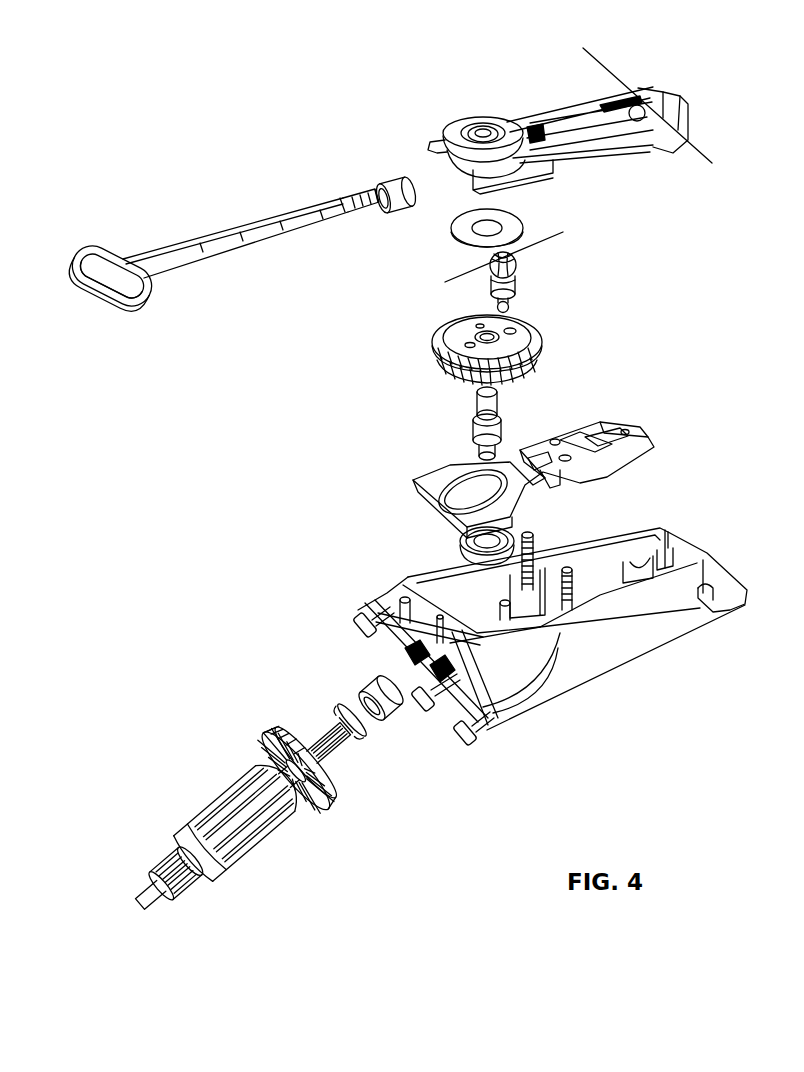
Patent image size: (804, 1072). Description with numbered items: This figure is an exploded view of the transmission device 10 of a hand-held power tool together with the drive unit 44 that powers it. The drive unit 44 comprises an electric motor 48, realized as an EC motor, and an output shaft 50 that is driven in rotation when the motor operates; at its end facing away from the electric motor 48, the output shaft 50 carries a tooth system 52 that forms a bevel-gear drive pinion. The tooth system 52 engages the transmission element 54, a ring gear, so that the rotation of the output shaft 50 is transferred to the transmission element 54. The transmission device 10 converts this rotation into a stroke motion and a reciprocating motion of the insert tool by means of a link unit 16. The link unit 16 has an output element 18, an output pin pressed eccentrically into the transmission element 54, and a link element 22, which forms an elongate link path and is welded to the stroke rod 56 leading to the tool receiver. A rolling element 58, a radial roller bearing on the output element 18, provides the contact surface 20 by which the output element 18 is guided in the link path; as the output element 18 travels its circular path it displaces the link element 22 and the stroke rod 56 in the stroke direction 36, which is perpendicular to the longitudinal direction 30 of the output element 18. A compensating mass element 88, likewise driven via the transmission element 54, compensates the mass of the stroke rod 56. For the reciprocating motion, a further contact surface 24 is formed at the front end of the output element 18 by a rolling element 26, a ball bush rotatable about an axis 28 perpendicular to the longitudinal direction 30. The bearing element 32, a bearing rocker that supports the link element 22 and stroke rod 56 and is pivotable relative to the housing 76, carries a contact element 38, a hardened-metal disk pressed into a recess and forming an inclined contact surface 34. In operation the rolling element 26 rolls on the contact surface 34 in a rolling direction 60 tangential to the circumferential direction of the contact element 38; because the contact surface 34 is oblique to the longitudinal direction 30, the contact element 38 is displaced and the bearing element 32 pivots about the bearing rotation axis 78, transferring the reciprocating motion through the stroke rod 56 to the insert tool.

The transmission device 10 is at (638, 235).
The link unit 16 is at (374, 120).
The output element 18 is at (512, 305).
The contact surface 20 is at (516, 291).
The link element 22 is at (102, 250).
The further contact surface 24 is at (514, 258).
The rolling element 26 is at (520, 278).
The axis 28 is at (460, 280).
The longitudinal direction 30 is at (570, 348).
The bearing element 32 is at (548, 123).
The contact surface 34 is at (466, 242).
The stroke direction 36 is at (320, 168).
The contact element 38 is at (513, 222).
The drive unit 44 is at (313, 850).
The electric motor 48 is at (222, 798).
The output shaft 50 is at (314, 750).
The tooth system 52 is at (338, 746).
The transmission element 54 is at (450, 358).
The stroke rod 56 is at (230, 242).
The rolling element 58 is at (492, 283).
The rolling direction 60 is at (458, 228).
The housing 76 is at (626, 618).
The bearing rotation axis 78 is at (604, 65).
The compensating mass element 88 is at (650, 436).